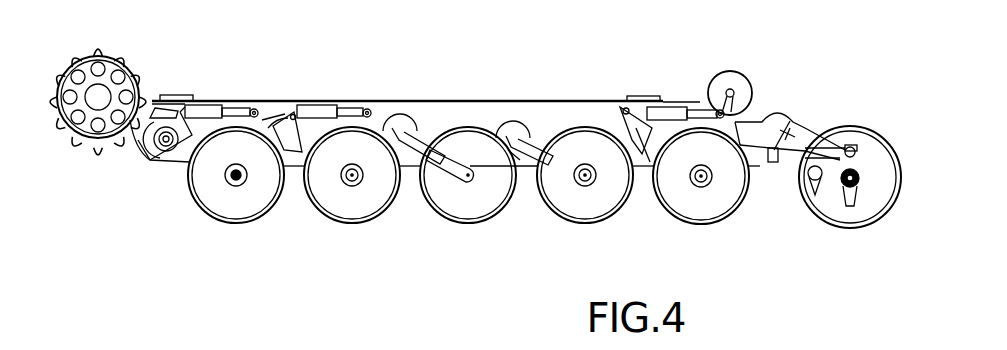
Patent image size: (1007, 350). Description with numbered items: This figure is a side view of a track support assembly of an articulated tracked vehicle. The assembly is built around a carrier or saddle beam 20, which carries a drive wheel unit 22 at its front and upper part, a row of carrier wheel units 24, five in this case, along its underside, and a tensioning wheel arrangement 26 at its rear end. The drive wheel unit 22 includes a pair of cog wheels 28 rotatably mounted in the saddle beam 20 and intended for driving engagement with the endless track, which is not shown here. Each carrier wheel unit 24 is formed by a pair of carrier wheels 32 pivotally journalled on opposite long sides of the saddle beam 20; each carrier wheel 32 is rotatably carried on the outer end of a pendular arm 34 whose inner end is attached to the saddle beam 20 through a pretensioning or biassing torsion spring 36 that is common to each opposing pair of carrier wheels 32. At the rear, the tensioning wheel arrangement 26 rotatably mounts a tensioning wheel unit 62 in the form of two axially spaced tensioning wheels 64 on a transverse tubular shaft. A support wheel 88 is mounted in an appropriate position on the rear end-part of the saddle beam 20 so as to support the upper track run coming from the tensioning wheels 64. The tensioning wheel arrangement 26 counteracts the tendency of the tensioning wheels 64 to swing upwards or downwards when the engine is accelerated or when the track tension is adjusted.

The saddle beam 20 is at (437, 113).
The drive wheel unit 22 is at (140, 58).
The carrier wheel unit 24 is at (181, 201).
The tensioning wheel arrangement 26 is at (811, 106).
The cog wheel 28 is at (86, 66).
The carrier wheel 32 is at (229, 203).
The pendular arm 34 is at (290, 145).
The torsion spring 36 is at (270, 125).
The tensioning wheel unit 62 is at (818, 225).
The tensioning wheel 64 is at (873, 203).
The support wheel 88 is at (736, 92).